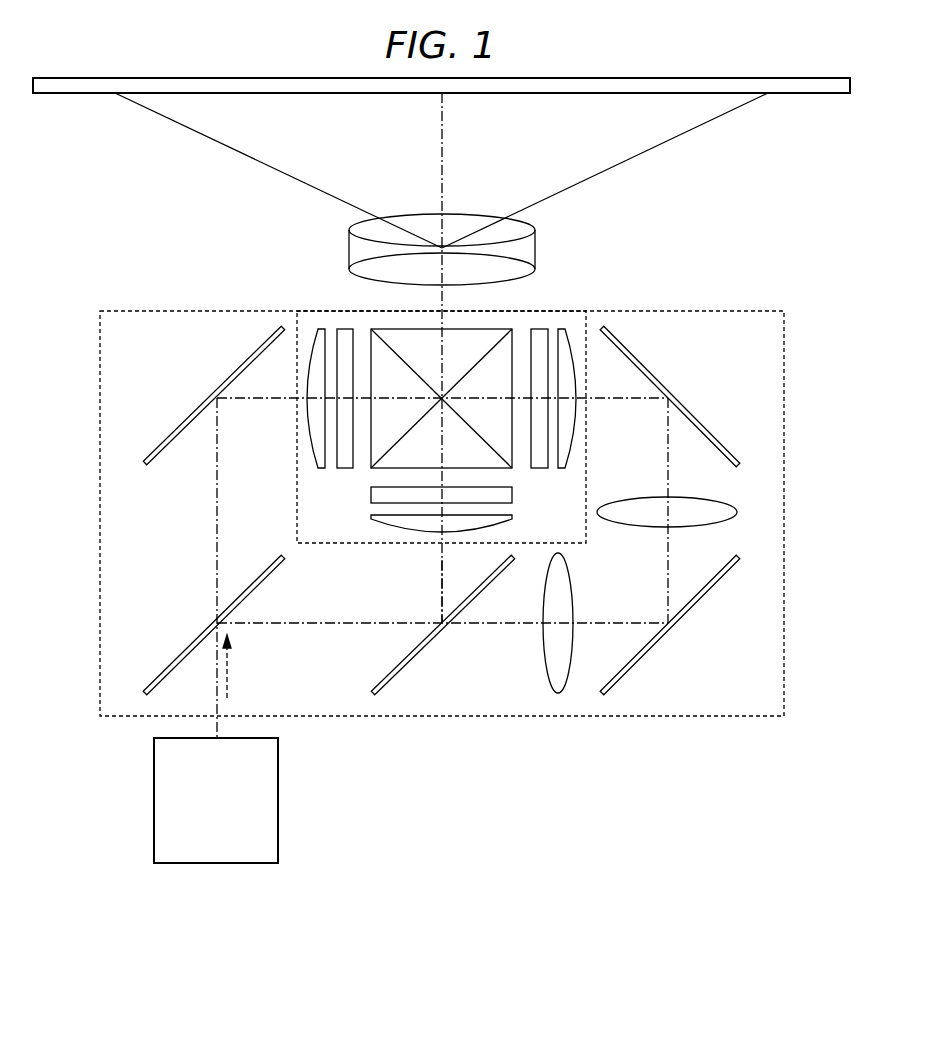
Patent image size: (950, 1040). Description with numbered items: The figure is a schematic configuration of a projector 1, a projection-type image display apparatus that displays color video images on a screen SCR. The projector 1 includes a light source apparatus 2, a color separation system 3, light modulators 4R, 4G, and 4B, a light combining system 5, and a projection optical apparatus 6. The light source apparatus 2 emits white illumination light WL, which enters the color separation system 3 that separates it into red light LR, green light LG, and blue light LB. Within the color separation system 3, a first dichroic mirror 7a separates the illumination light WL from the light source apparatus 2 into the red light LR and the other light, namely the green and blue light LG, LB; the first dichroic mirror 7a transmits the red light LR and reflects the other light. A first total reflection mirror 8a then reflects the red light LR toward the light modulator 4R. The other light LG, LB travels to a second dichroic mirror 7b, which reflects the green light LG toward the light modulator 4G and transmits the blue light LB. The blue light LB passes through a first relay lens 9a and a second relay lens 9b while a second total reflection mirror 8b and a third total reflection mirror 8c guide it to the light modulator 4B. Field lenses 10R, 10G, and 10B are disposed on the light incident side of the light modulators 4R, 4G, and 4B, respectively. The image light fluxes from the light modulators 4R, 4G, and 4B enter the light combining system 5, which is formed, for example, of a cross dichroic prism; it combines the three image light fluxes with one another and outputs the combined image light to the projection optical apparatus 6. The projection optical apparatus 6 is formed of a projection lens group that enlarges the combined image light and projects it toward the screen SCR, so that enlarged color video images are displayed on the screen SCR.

The projector 1 is at (794, 281).
The light source apparatus 2 is at (280, 797).
The color separation system 3 is at (100, 455).
The light modulator 4R is at (345, 328).
The light modulator 4G is at (378, 495).
The light modulator 4B is at (540, 328).
The light combining system 5 is at (466, 334).
The projection optical apparatus 6 is at (422, 225).
The first dichroic mirror 7a is at (178, 658).
The second dichroic mirror 7b is at (420, 658).
The first total reflection mirror 8a is at (190, 413).
The second total reflection mirror 8b is at (693, 608).
The third total reflection mirror 8c is at (697, 414).
The first relay lens 9a is at (543, 645).
The second relay lens 9b is at (745, 492).
The field lens 10R is at (319, 328).
The field lens 10G is at (378, 518).
The field lens 10B is at (564, 328).
The screen SCR is at (818, 96).
The illumination light WL is at (230, 680).
The red light LR is at (215, 532).
The green light LG is at (440, 580).
The blue light LB is at (665, 570).
The green light and blue light LG, LB is at (285, 625).